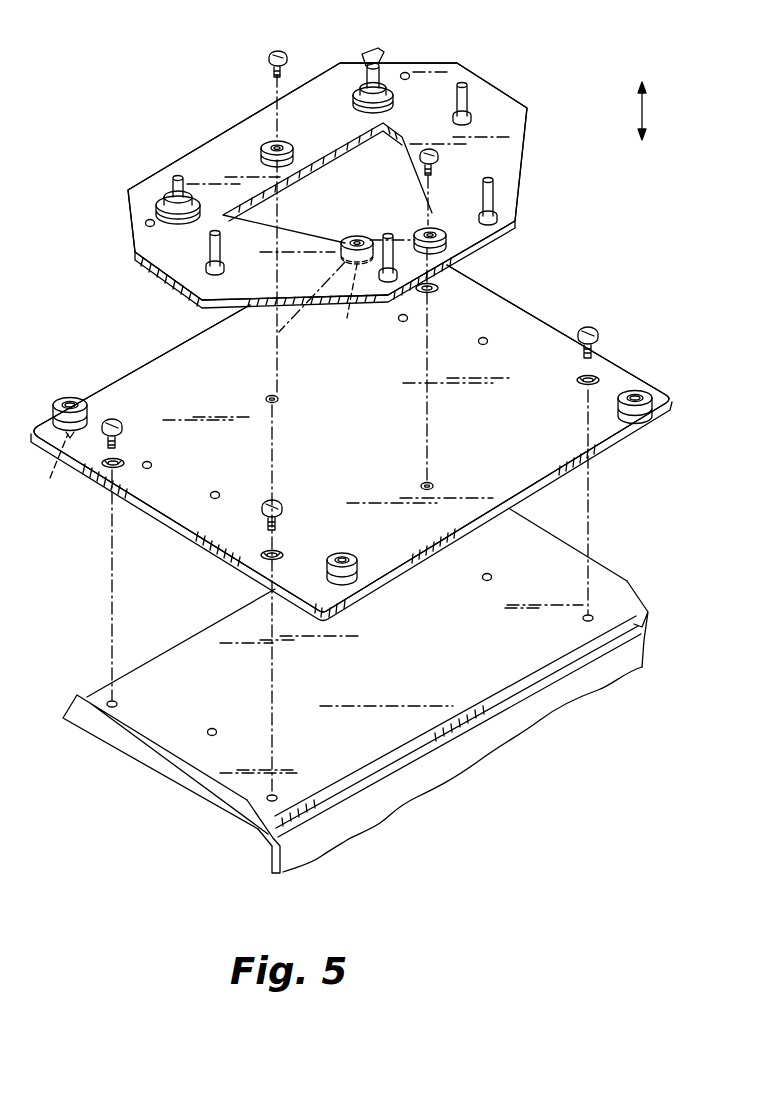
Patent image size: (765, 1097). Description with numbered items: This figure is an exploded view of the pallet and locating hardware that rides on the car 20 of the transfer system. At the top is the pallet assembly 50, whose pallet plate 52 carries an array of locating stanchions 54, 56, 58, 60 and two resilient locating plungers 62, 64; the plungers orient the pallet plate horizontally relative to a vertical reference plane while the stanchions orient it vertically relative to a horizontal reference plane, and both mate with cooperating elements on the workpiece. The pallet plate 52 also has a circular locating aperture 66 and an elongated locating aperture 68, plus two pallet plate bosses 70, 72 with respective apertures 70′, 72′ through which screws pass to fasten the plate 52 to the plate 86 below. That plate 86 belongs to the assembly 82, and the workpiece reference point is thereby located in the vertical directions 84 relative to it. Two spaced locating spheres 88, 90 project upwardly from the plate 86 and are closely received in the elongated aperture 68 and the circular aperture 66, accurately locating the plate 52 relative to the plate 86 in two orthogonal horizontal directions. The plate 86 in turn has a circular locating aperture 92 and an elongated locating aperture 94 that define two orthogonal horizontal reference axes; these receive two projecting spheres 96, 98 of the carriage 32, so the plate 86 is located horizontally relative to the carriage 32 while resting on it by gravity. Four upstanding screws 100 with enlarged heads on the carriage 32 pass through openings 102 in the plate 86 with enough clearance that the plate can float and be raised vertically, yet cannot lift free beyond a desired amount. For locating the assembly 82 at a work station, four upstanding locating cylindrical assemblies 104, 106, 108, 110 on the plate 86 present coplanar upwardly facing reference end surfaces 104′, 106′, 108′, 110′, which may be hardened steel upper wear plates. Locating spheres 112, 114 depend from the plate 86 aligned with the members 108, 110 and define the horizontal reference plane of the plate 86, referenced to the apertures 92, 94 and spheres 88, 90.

The car 20 is at (500, 757).
The carriage 32 is at (643, 630).
The pallet assembly 50 is at (543, 118).
The pallet plate 52 is at (492, 96).
The locating stanchion 54 is at (222, 248).
The locating stanchion 56 is at (389, 234).
The locating stanchion 58 is at (496, 210).
The locating stanchion 60 is at (467, 103).
The resilient locating plunger 62 is at (179, 176).
The resilient locating plunger 64 is at (372, 52).
The circular locating aperture 66 is at (152, 229).
The elongated locating aperture 68 is at (407, 80).
The pallet plate boss 70 is at (262, 158).
The boss aperture 70′ is at (278, 144).
The pallet plate boss 72 is at (447, 250).
The boss aperture 72′ is at (432, 231).
The assembly 82 is at (558, 253).
The vertical directions 84 is at (645, 112).
The plate 86 is at (610, 452).
The locating sphere 88 is at (404, 323).
The locating sphere 90 is at (152, 466).
The circular locating aperture 92 is at (220, 494).
The elongated locating aperture 94 is at (483, 345).
The projecting sphere 96 is at (216, 730).
The projecting sphere 98 is at (487, 582).
The screw 100 is at (589, 326).
The opening 102 is at (580, 384).
The locating cylindrical assembly 104 is at (649, 420).
The reference end surface 104′ is at (640, 392).
The locating cylindrical assembly 106 is at (354, 588).
The reference end surface 106′ is at (355, 559).
The locating cylindrical assembly 108 is at (88, 410).
The reference end surface 108′ is at (66, 398).
The locating cylindrical assembly 110 is at (345, 238).
The reference end surface 110′ is at (360, 238).
The locating sphere 112 is at (52, 470).
The locating sphere 114 is at (346, 306).